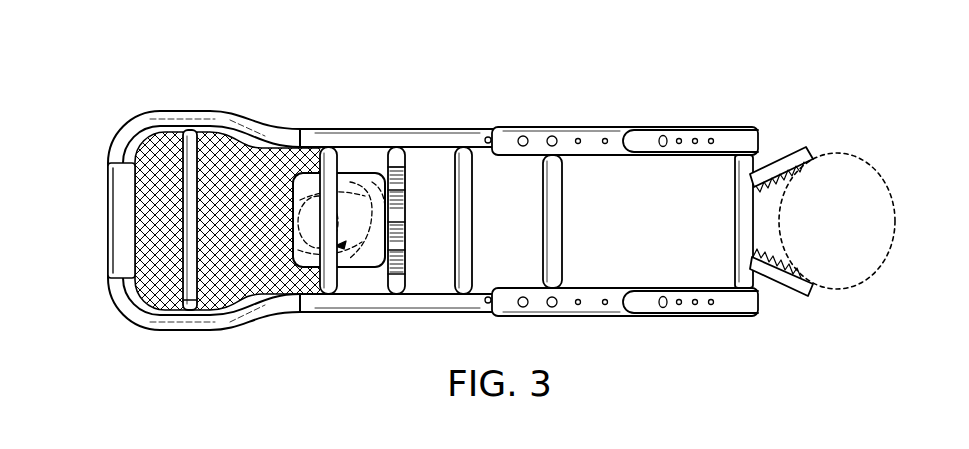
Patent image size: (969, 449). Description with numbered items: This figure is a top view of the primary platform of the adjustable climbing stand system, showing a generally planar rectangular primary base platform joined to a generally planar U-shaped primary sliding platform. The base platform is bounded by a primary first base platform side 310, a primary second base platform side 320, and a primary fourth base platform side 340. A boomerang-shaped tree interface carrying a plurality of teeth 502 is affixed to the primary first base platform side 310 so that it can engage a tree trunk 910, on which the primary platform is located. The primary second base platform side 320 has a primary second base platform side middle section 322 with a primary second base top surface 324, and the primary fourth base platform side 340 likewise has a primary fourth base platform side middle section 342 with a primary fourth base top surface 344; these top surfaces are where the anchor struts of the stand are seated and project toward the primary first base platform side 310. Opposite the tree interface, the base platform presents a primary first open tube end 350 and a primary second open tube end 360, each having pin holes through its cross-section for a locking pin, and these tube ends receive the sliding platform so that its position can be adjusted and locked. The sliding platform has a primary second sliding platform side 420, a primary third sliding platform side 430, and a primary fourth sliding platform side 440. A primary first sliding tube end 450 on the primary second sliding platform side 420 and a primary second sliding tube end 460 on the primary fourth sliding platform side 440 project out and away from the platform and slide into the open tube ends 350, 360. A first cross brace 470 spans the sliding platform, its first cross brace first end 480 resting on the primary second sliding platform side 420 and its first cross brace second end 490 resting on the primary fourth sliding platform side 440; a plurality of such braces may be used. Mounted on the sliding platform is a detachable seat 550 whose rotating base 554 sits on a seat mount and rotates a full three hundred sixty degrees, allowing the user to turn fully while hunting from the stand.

The primary first base platform side 310 is at (800, 221).
The primary second base platform side 320 is at (625, 339).
The primary second base platform side middle section 322 is at (628, 315).
The primary second base top surface 324 is at (593, 297).
The primary fourth base platform side 340 is at (631, 93).
The primary fourth base platform side middle section 342 is at (598, 123).
The primary fourth base top surface 344 is at (537, 142).
The primary first open tube end 350 is at (490, 311).
The primary second open tube end 360 is at (490, 133).
The primary second sliding platform side 420 is at (285, 315).
The primary third sliding platform side 430 is at (120, 280).
The primary fourth sliding platform side 440 is at (227, 125).
The primary first sliding tube end 450 is at (482, 300).
The primary second sliding tube end 460 is at (470, 138).
The first cross brace 470 is at (180, 147).
The first cross brace first end 480 is at (185, 307).
The first cross brace second end 490 is at (193, 130).
The teeth 502 is at (805, 168).
The seat 550 is at (373, 185).
The rotating base 554 is at (315, 195).
The tree trunk 910 is at (857, 288).